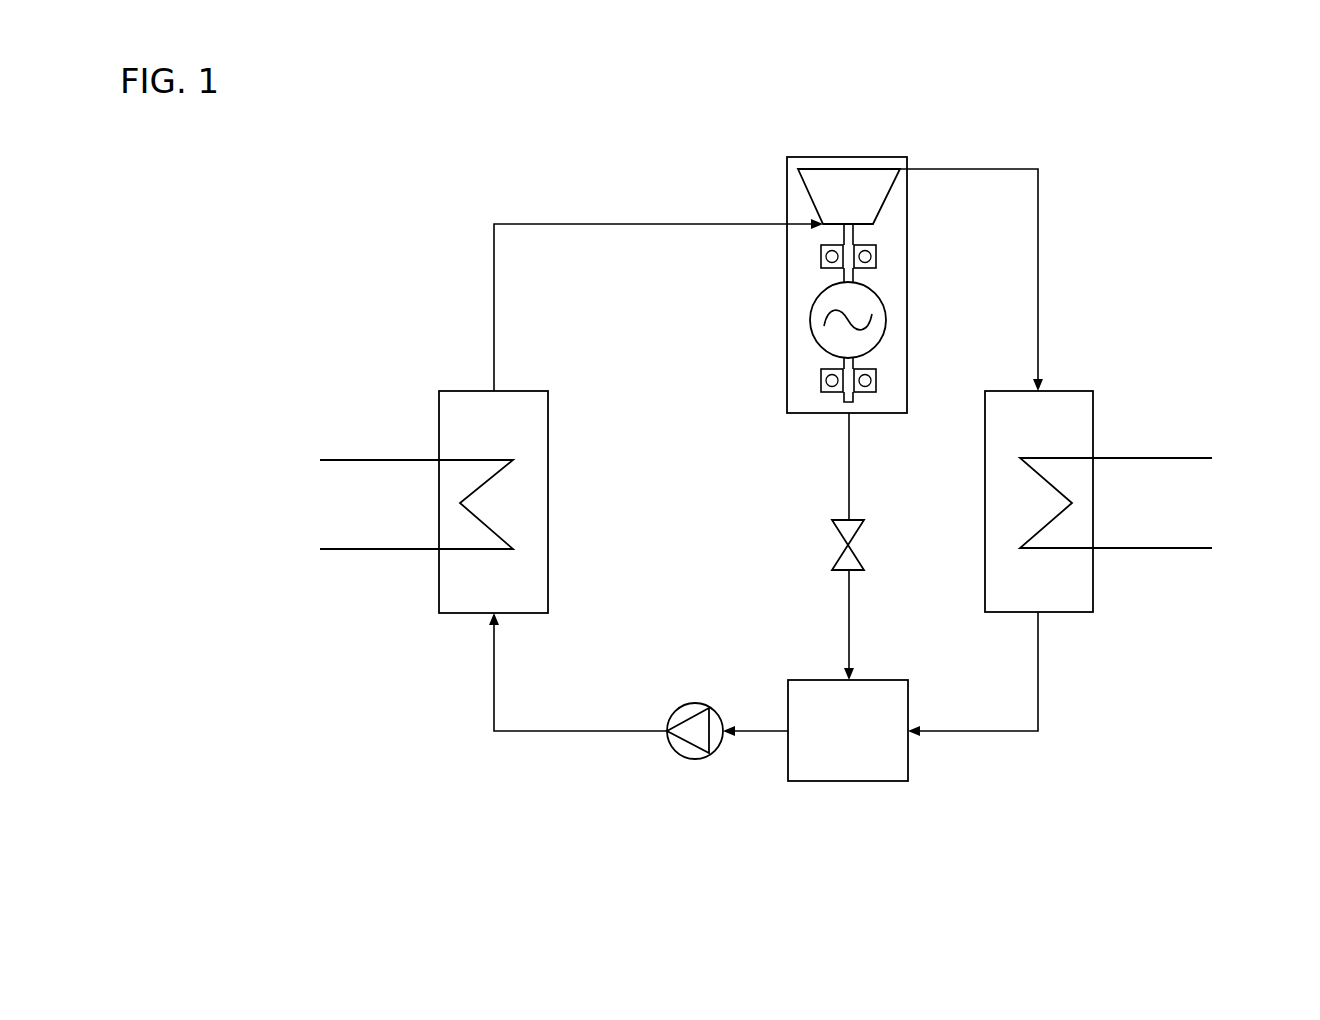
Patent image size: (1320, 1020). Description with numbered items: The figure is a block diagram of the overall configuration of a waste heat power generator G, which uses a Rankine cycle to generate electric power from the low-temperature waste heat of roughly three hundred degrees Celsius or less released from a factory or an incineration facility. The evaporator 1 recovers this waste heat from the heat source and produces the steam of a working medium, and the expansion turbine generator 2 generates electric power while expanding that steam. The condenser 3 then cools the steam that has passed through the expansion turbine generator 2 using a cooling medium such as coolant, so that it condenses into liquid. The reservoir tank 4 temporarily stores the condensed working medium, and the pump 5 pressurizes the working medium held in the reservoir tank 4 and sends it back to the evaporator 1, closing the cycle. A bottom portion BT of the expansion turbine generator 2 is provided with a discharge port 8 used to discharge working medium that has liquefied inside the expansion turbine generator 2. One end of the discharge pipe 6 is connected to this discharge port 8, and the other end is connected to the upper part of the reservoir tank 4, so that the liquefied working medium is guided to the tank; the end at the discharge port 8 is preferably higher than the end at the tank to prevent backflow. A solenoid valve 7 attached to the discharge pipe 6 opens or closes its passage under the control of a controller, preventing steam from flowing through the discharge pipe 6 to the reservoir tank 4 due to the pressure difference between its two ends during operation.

The evaporator 1 is at (439, 410).
The expansion turbine generator 2 is at (828, 157).
The condenser 3 is at (1063, 391).
The reservoir tank 4 is at (908, 761).
The pump 5 is at (683, 706).
The discharge pipe 6 is at (848, 500).
The solenoid valve 7 is at (832, 533).
The discharge port 8 is at (852, 415).
The bottom portion BT is at (816, 424).
The waste heat power generator G is at (1094, 139).